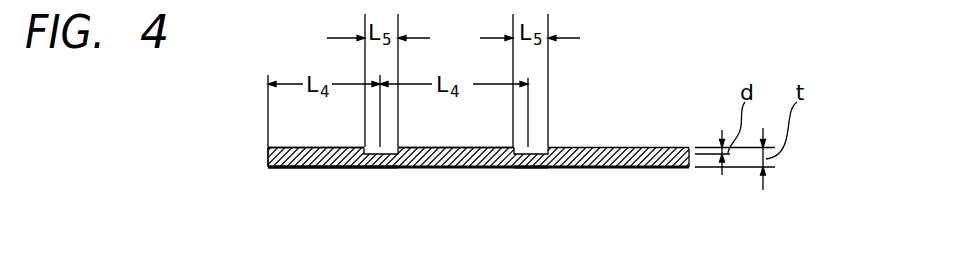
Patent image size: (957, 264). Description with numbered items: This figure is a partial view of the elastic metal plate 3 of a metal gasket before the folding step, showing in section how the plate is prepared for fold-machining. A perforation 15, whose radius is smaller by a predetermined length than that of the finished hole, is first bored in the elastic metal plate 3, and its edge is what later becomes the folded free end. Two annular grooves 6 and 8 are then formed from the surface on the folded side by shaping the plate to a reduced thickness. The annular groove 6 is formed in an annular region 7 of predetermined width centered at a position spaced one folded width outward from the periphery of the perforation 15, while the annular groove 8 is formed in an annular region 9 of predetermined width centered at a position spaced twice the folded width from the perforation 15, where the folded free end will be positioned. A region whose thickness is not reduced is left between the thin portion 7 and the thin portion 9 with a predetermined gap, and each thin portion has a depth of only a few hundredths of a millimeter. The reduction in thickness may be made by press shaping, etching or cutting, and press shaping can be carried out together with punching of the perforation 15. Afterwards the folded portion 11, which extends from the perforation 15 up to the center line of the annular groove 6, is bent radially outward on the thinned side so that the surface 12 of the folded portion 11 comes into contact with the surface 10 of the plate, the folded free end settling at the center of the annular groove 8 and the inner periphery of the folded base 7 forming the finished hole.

The elastic metal plate 3 is at (641, 160).
The annular groove 6 is at (388, 149).
The annular region (thin portion) 7 is at (382, 166).
The annular groove 8 is at (541, 153).
The annular region (thin portion) 9 is at (541, 155).
The surface 10 is at (466, 147).
The folded portion 11 is at (297, 158).
The surface of the folded portion 12 is at (323, 147).
The perforation 15 is at (266, 158).